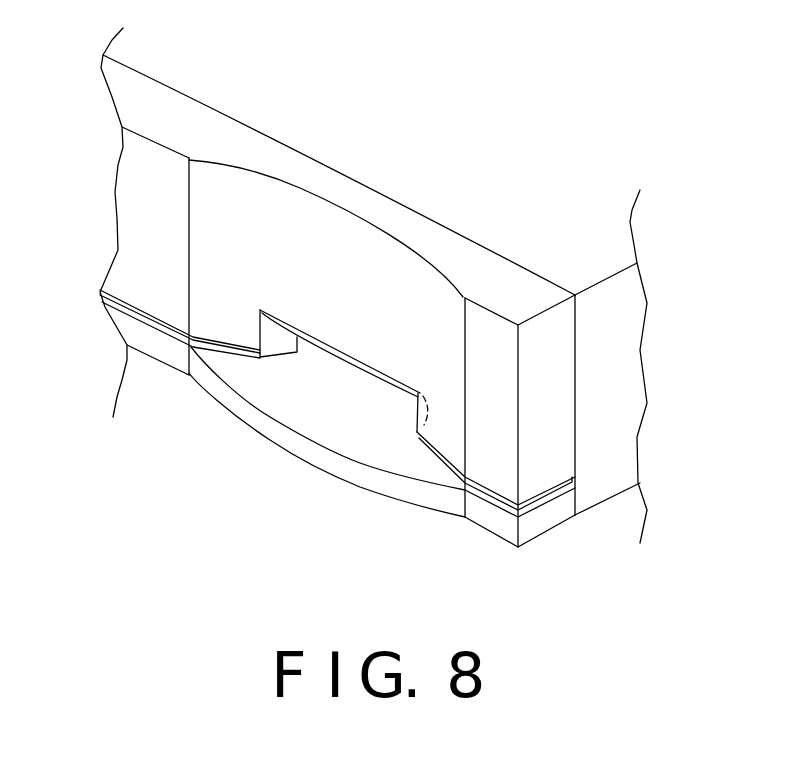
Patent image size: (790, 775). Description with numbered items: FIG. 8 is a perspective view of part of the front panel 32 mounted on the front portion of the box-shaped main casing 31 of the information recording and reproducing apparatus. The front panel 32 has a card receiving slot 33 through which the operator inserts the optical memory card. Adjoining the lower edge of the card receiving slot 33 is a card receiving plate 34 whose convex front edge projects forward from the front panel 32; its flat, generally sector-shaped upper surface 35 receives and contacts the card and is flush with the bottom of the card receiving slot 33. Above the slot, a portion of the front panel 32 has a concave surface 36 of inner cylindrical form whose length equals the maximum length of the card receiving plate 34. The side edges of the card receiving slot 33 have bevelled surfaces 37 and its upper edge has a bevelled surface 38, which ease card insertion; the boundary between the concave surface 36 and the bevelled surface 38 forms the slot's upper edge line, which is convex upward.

The main casing 31 is at (598, 218).
The front panel 32 is at (467, 257).
The card receiving slot 33 is at (297, 352).
The card receiving plate 34 is at (325, 413).
The upper surface 35 is at (378, 437).
The concave surface 36 is at (327, 225).
The bevelled surfaces 37 is at (268, 330).
The bevelled surface 38 is at (300, 327).